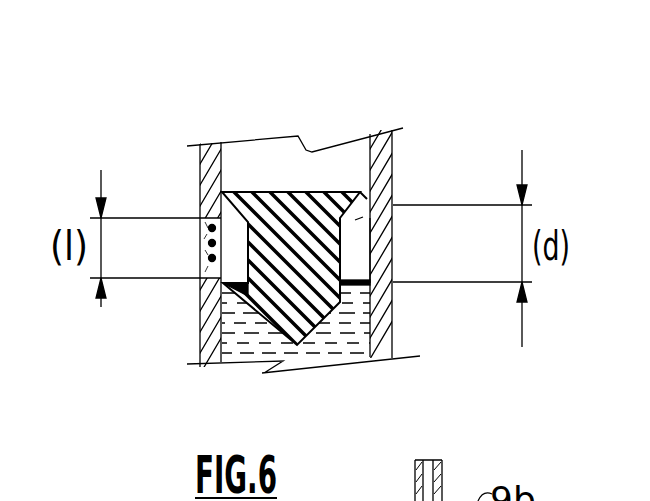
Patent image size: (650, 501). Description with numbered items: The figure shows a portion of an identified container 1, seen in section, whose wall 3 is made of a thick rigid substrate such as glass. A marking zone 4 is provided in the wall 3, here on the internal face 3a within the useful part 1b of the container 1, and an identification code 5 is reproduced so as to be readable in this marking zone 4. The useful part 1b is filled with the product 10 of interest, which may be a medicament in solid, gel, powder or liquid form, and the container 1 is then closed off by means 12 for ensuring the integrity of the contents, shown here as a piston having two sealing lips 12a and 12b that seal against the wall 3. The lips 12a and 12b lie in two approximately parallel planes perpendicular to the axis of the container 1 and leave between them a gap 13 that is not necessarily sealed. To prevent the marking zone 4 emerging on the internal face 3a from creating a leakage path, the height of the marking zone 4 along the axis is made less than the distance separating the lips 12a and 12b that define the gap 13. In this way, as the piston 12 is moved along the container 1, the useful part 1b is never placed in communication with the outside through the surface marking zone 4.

The container 1 is at (404, 148).
The useful part of the container 1b is at (355, 243).
The wall of the container 3 is at (212, 328).
The internal face of the wall 3a is at (370, 333).
The marking zone 4 is at (200, 265).
The identification code 5 is at (203, 228).
The product of interest 10 is at (243, 325).
The means for ensuring integrity of the contents 12 is at (307, 327).
The sealing lip 12a is at (390, 190).
The sealing lip 12b is at (362, 289).
The gap 13 is at (360, 220).